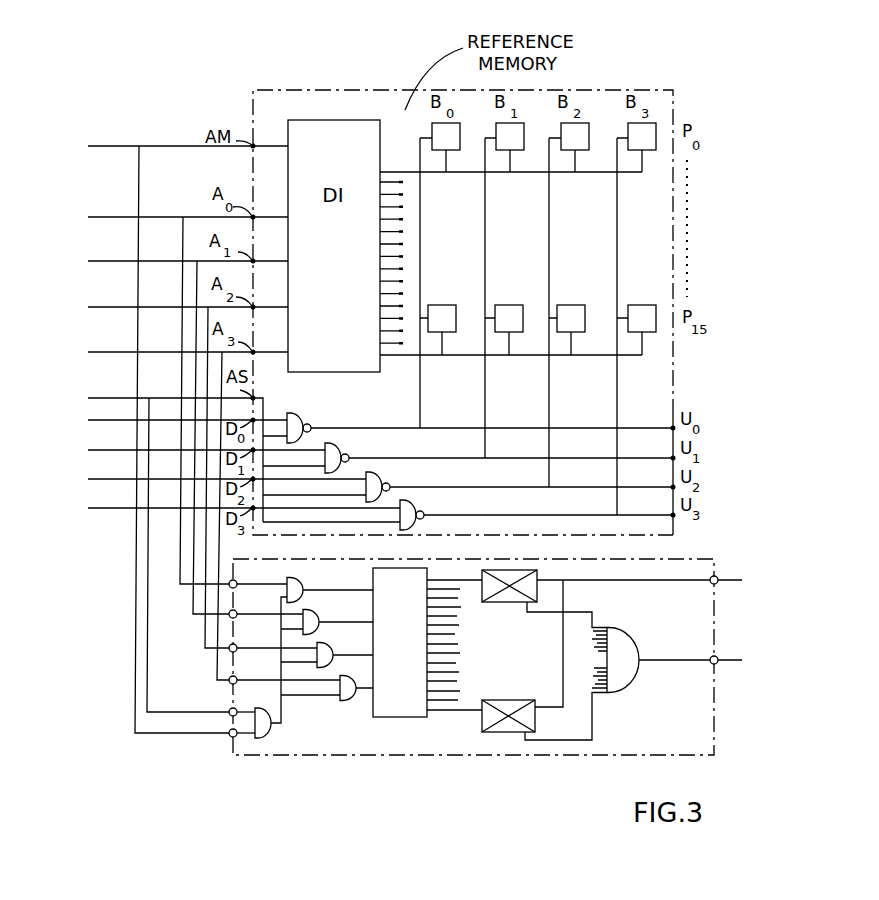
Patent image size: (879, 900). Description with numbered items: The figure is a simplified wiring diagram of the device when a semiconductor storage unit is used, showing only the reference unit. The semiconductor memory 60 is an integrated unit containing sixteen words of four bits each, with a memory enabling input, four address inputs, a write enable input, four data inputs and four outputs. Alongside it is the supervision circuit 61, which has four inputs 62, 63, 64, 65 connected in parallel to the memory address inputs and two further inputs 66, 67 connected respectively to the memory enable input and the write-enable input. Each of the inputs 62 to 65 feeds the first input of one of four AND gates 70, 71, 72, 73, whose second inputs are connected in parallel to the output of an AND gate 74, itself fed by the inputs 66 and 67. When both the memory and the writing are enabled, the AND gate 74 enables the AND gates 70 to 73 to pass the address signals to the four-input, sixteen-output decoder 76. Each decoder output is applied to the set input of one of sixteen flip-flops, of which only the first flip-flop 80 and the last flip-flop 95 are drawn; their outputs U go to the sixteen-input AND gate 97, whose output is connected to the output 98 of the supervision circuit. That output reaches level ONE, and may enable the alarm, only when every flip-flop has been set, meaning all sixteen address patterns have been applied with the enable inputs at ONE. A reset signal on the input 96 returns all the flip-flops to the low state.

The semiconductor memory 60 is at (660, 388).
The supervision circuit 61 is at (489, 657).
The input 62 is at (258, 577).
The input 63 is at (266, 604).
The input 64 is at (273, 640).
The input 65 is at (284, 672).
The input 66 is at (245, 700).
The input 67 is at (226, 743).
The AND gate 70 is at (330, 584).
The AND gate 71 is at (338, 616).
The AND gate 72 is at (345, 652).
The AND gate 73 is at (356, 681).
The AND gate 74 is at (297, 674).
The decoder 76 is at (427, 655).
The flip-flop 80 is at (538, 597).
The flip-flop 95 is at (538, 713).
The reset input 96 is at (641, 570).
The AND gate 97 is at (627, 660).
The output 98 is at (692, 651).